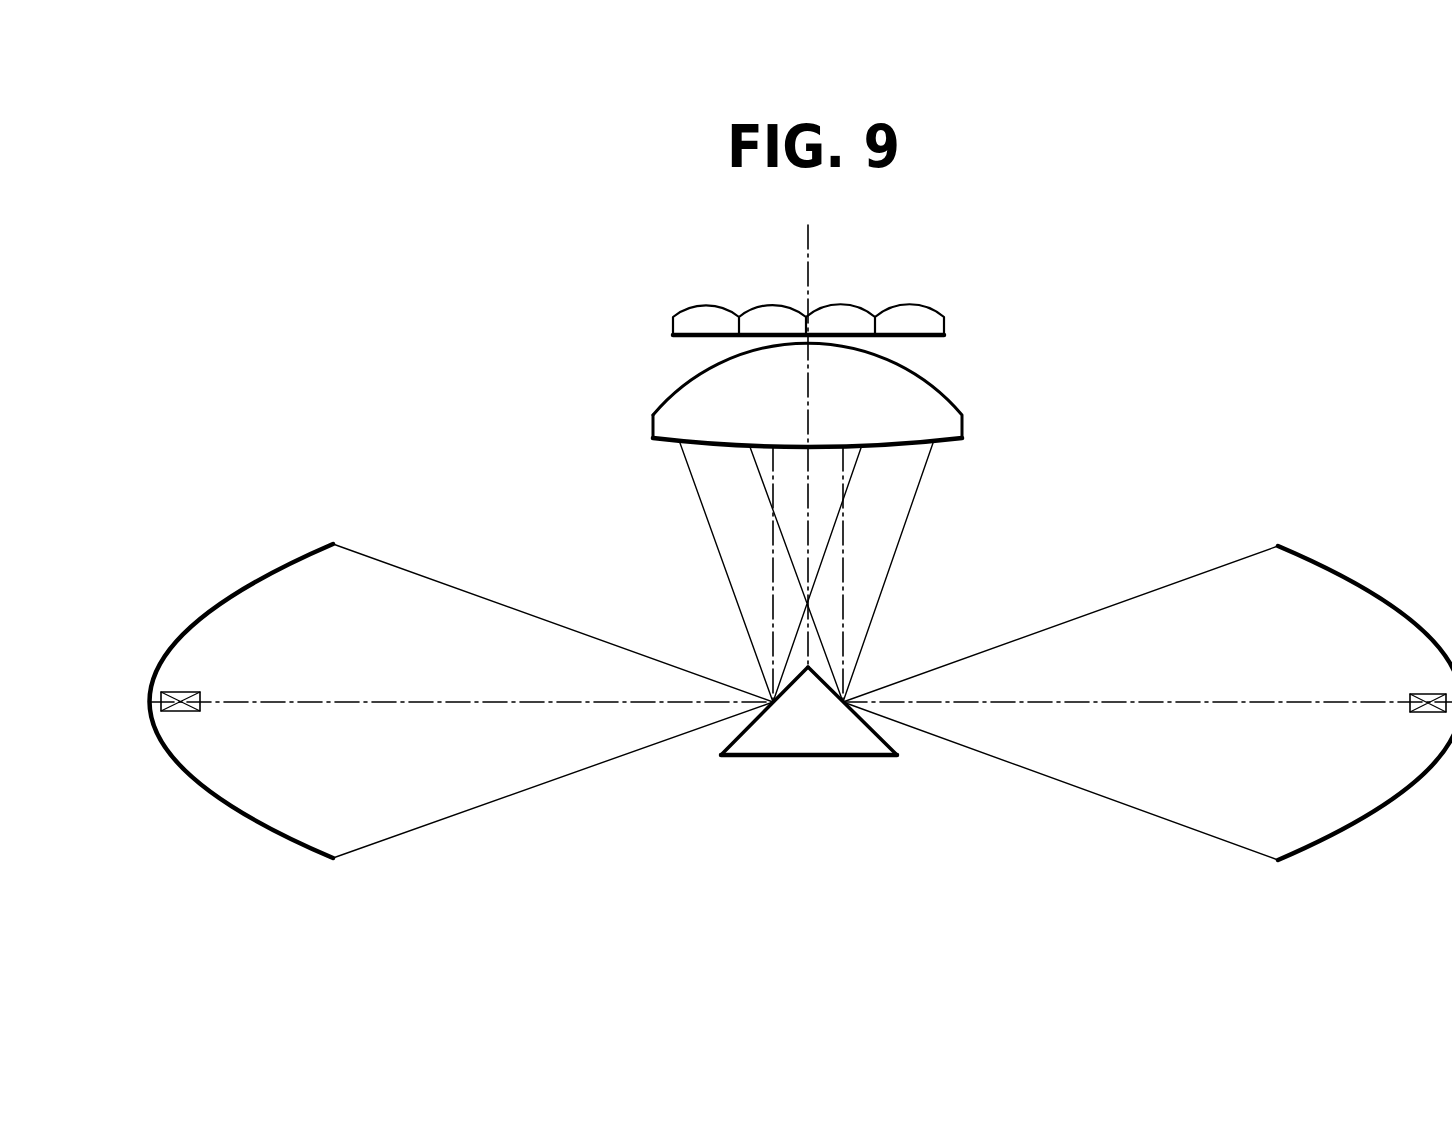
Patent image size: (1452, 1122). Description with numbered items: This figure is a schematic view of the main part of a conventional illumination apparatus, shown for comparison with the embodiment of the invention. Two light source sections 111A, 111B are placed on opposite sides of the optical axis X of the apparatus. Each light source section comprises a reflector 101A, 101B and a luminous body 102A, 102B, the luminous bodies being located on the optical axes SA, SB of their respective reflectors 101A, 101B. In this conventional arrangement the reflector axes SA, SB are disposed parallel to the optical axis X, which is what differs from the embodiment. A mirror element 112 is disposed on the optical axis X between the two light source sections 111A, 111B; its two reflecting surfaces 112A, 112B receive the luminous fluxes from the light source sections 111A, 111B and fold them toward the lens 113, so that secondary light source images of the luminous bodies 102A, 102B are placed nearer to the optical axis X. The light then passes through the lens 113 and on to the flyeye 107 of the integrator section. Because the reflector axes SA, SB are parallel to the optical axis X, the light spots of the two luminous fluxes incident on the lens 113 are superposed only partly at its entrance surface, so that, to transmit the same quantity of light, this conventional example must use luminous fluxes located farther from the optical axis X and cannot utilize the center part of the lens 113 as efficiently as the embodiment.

The flyeye 107 is at (944, 322).
The lens 113 is at (957, 423).
The mirror element 112 is at (808, 734).
The reflecting surface of mirror element 112A is at (738, 735).
The reflecting surface of mirror element 112B is at (880, 735).
The light source section 111A is at (462, 658).
The light source section 111B is at (1147, 666).
The reflector 101A is at (252, 588).
The reflector 101B is at (1337, 583).
The luminous body 102A is at (198, 712).
The luminous body 102B is at (1410, 710).
The optical axis of reflector SA is at (427, 702).
The optical axis of reflector SB is at (1107, 702).
The optical axis of illumination apparatus X is at (806, 250).